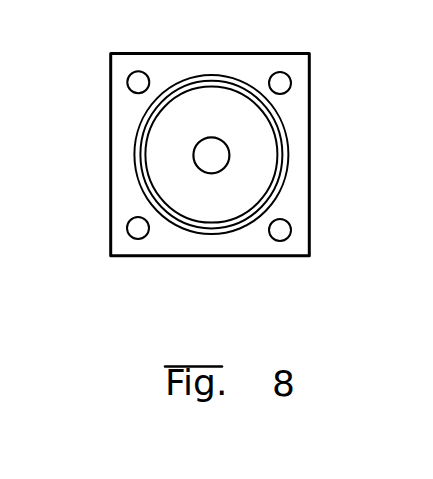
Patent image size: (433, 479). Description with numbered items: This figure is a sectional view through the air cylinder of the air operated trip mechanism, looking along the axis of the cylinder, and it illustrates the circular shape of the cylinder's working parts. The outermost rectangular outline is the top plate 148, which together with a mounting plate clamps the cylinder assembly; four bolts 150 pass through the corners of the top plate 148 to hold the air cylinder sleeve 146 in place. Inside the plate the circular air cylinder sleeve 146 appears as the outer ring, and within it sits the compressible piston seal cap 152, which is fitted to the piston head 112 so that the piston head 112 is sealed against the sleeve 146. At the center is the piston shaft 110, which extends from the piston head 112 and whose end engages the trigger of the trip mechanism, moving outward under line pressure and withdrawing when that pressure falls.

The piston shaft 110 is at (207, 152).
The piston head 112 is at (223, 207).
The air cylinder sleeve 146 is at (140, 172).
The top plate 148 is at (303, 180).
The bolts 150 is at (149, 82).
The piston seal cap 152 is at (141, 148).